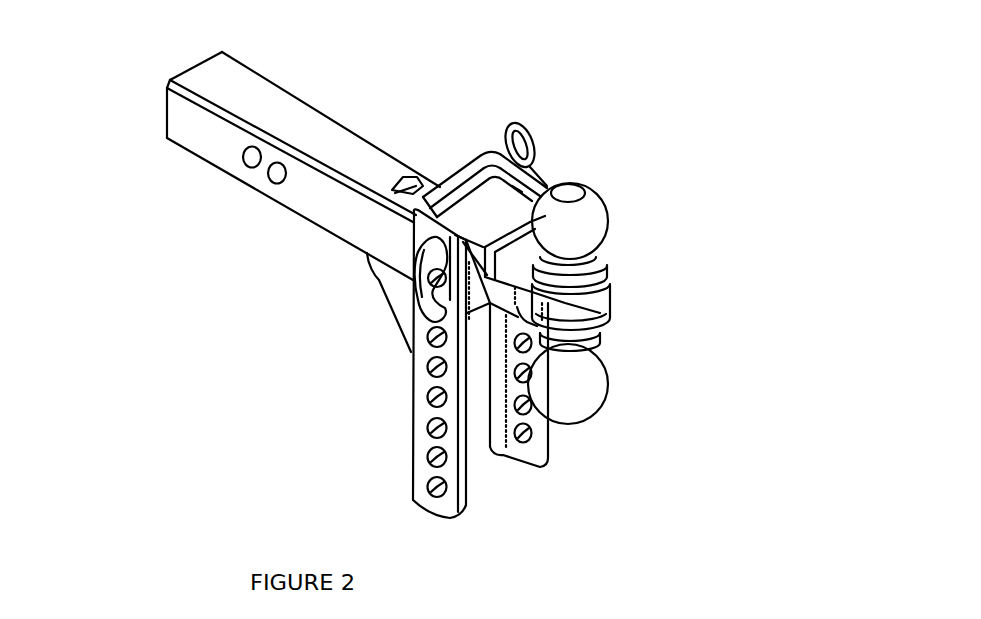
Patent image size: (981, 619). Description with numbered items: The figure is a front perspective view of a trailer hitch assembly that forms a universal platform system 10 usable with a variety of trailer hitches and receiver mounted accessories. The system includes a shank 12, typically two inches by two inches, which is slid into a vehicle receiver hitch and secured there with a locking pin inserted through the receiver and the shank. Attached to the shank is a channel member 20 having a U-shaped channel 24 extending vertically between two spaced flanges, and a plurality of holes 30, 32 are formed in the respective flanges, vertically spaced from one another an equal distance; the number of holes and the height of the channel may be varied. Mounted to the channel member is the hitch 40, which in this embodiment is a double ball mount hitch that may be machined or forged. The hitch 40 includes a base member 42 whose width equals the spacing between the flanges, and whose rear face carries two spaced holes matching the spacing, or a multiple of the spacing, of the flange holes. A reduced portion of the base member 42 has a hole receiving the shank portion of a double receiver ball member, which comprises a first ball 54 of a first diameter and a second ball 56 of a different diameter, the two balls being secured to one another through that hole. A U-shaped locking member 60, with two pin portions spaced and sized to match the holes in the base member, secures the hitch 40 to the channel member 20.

The universal platform system 10 is at (210, 187).
The shank 12 is at (293, 93).
The channel member 20 is at (480, 160).
The U-shaped channel 24 is at (472, 443).
The holes 30 is at (442, 317).
The holes 32 is at (533, 433).
The hitch 40 is at (653, 321).
The base member 42 is at (517, 190).
The first ball 54 is at (610, 225).
The second ball 56 is at (578, 403).
The U-shaped locking member 60 is at (412, 278).